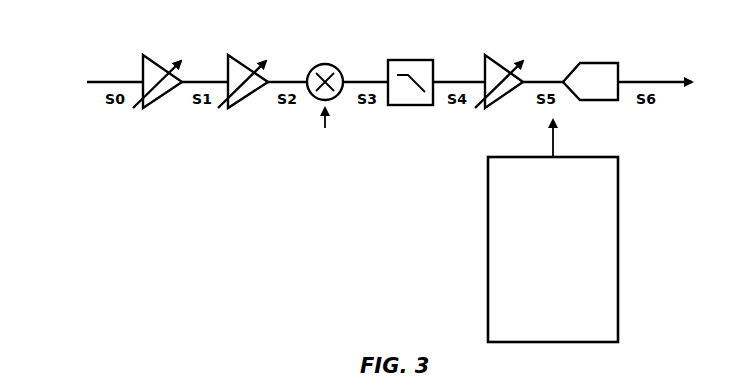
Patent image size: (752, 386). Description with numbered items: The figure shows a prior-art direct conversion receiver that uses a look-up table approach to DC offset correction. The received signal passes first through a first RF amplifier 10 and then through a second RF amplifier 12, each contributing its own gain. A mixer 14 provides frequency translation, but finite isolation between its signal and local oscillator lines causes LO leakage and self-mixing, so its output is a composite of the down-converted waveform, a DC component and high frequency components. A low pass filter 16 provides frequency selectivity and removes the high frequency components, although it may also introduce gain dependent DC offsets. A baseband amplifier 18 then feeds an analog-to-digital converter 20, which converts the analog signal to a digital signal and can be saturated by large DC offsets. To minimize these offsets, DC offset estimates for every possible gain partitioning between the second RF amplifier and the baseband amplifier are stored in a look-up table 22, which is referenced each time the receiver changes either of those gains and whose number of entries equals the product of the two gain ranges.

The first RF amplifier 10 is at (157, 57).
The second RF amplifier 12 is at (242, 57).
The mixer 14 is at (345, 73).
The low pass filter 16 is at (411, 105).
The baseband amplifier 18 is at (497, 56).
The analog-to-digital converter 20 is at (600, 63).
The look-up table 22 is at (618, 248).